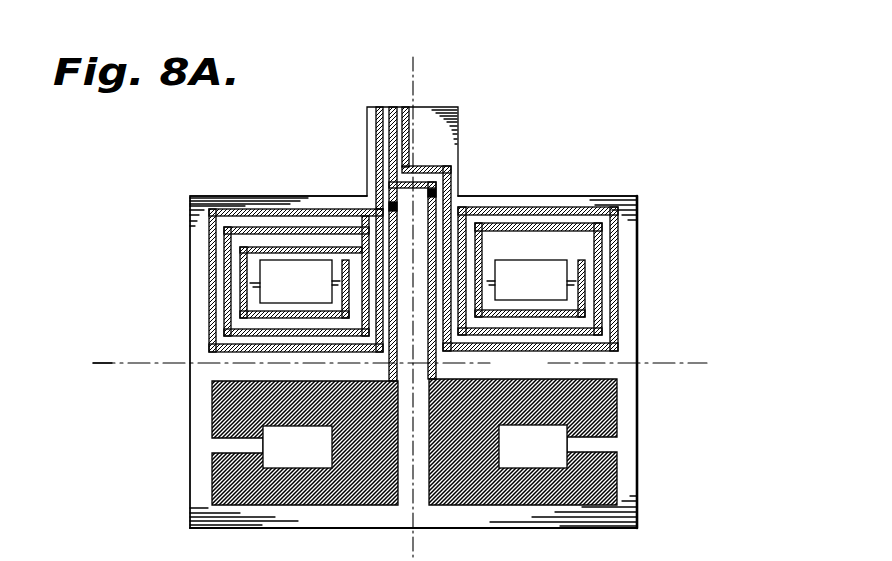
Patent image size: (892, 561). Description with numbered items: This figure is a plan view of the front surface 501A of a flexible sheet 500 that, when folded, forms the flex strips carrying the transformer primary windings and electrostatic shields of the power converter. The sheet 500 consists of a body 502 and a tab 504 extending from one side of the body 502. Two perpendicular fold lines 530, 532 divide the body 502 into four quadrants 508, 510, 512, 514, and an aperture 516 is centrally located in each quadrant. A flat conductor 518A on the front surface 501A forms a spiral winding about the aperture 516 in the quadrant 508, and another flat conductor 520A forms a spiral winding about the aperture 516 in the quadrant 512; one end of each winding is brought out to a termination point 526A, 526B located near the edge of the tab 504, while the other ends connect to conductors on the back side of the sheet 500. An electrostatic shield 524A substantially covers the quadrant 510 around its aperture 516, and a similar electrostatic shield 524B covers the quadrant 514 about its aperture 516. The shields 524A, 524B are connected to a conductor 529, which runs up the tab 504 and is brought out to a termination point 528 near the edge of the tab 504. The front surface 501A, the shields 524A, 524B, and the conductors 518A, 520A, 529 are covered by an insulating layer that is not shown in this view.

The flexible sheet 500 is at (614, 135).
The front surface 501A is at (400, 365).
The body 502 is at (652, 354).
The tab 504 is at (458, 152).
The quadrant 508 is at (255, 280).
The quadrant 510 is at (260, 443).
The quadrant 512 is at (583, 258).
The quadrant 514 is at (573, 442).
The aperture 516 is at (280, 283).
The flat conductor 518A is at (210, 313).
The flat conductor 520A is at (617, 330).
The electrostatic shield 524A is at (212, 492).
The electrostatic shield 524B is at (610, 493).
The termination point 526A is at (378, 107).
The termination point 526B is at (410, 107).
The termination point 528 is at (397, 107).
The conductor 529 is at (385, 196).
The fold line 530 is at (108, 358).
The fold line 532 is at (418, 93).